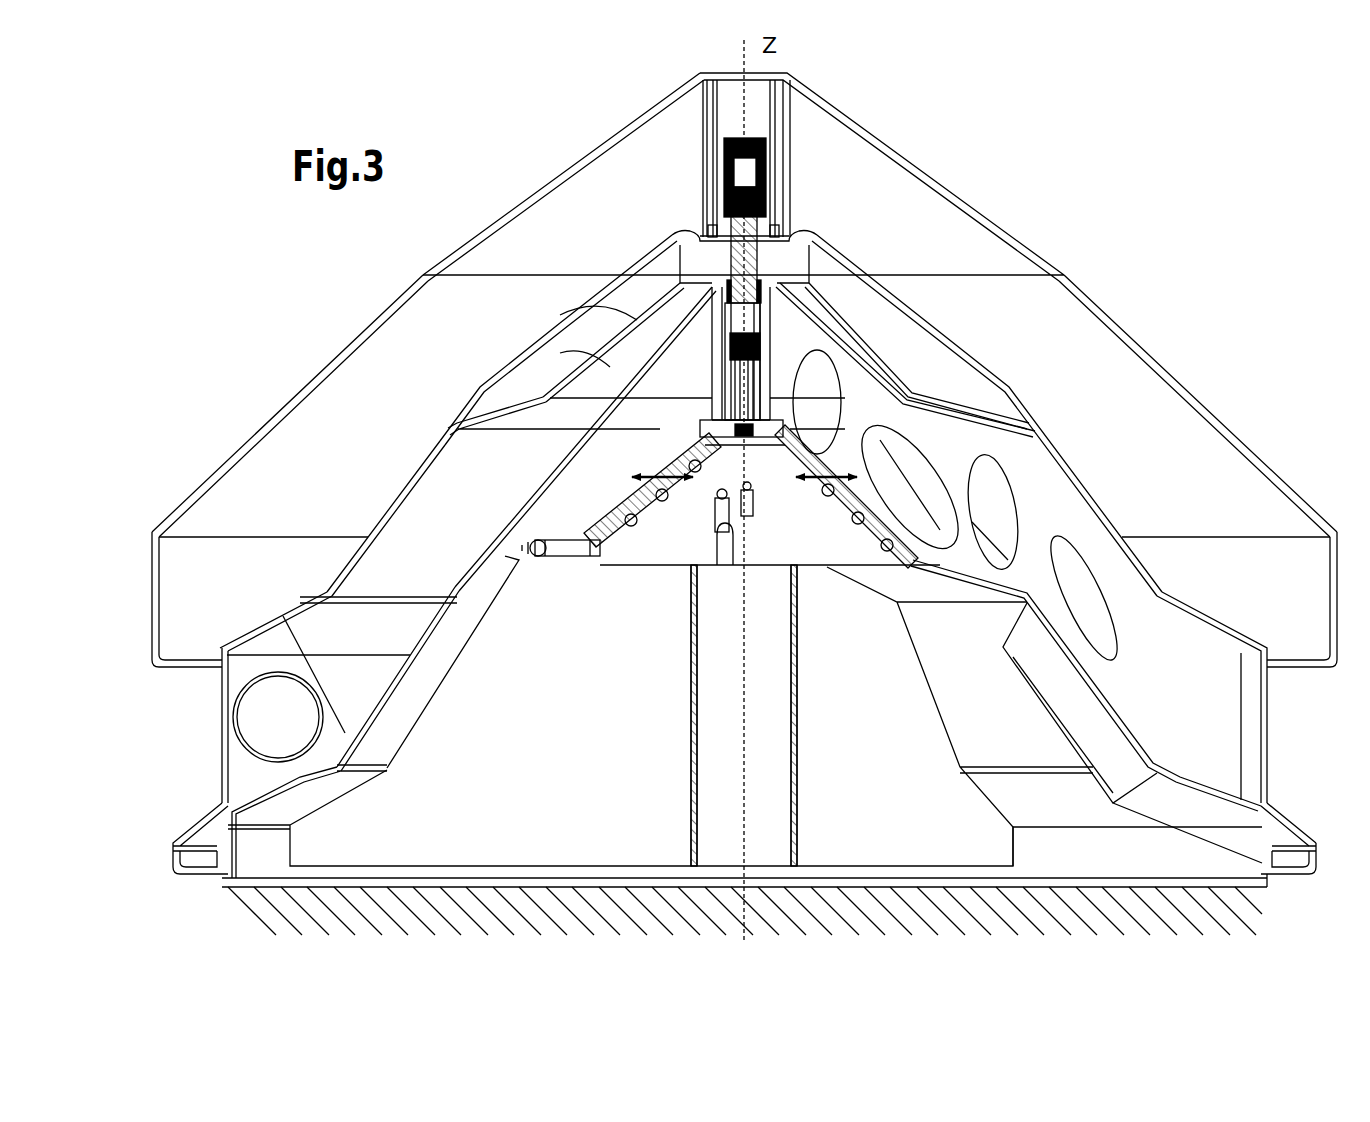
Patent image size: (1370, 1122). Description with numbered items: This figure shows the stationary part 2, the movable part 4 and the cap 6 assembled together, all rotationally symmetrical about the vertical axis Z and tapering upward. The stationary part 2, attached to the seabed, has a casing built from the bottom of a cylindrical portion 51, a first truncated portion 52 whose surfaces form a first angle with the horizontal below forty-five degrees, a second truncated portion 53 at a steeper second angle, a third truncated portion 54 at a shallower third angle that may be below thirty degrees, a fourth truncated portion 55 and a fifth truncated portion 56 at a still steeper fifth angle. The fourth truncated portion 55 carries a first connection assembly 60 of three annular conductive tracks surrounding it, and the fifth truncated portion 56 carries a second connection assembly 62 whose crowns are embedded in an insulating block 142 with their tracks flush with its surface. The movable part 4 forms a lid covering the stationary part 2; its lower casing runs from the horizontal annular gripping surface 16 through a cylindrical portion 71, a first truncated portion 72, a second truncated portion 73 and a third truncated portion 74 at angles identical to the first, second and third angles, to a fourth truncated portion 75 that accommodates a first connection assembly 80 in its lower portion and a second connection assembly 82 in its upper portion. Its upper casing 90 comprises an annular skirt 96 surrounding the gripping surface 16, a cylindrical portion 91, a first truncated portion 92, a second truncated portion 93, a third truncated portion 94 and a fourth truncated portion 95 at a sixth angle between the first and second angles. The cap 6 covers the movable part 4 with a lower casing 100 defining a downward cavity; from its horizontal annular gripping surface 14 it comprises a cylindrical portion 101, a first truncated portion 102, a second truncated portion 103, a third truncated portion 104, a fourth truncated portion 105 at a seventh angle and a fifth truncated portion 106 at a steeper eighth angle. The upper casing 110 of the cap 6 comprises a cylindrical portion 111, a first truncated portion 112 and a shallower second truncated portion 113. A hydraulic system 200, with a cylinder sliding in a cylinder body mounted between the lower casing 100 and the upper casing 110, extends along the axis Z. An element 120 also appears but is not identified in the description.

The stationary part 2 is at (350, 815).
The movable part 4 is at (1220, 757).
The cap 6 is at (1190, 430).
The gripping surface 14 is at (1300, 668).
The gripping surface 16 is at (1305, 873).
The cylindrical portion 51 is at (220, 878).
The first truncated portion 52 is at (1282, 808).
The second truncated portion 53 is at (400, 690).
The third truncated portion 54 is at (495, 612).
The fourth truncated portion 55 is at (612, 558).
The fifth truncated portion 56 is at (705, 566).
The first connection assembly 60 is at (800, 510).
The second connection assembly 62 is at (752, 495).
The cylindrical portion 71 is at (1308, 842).
The first truncated portion 72 is at (1200, 758).
The second truncated portion 73 is at (392, 625).
The third truncated portion 74 is at (480, 556).
The fourth truncated portion 75 is at (605, 500).
The first connection assembly 80 is at (848, 488).
The second connection assembly 82 is at (707, 427).
The upper casing 90 is at (558, 416).
The cylindrical portion 91 is at (222, 692).
The first truncated portion 92 is at (292, 624).
The second truncated portion 93 is at (465, 556).
The third truncated portion 94 is at (455, 422).
The fourth truncated portion 95 is at (610, 362).
The annular skirt 96 is at (180, 840).
The lower casing 100 is at (880, 330).
The cylindrical portion 101 is at (1270, 640).
The first truncated portion 102 is at (265, 622).
The second truncated portion 103 is at (420, 462).
The third truncated portion 104 is at (490, 405).
The fourth truncated portion 105 is at (640, 322).
The fifth truncated portion 106 is at (810, 265).
The upper casing 110 is at (1008, 219).
The cylindrical portion 111 is at (152, 578).
The first truncated portion 112 is at (330, 360).
The second truncated portion 113 is at (585, 152).
The left adjusting rod 120 is at (632, 478).
The insulating block 142 is at (652, 562).
The hydraulic system 200 is at (775, 188).